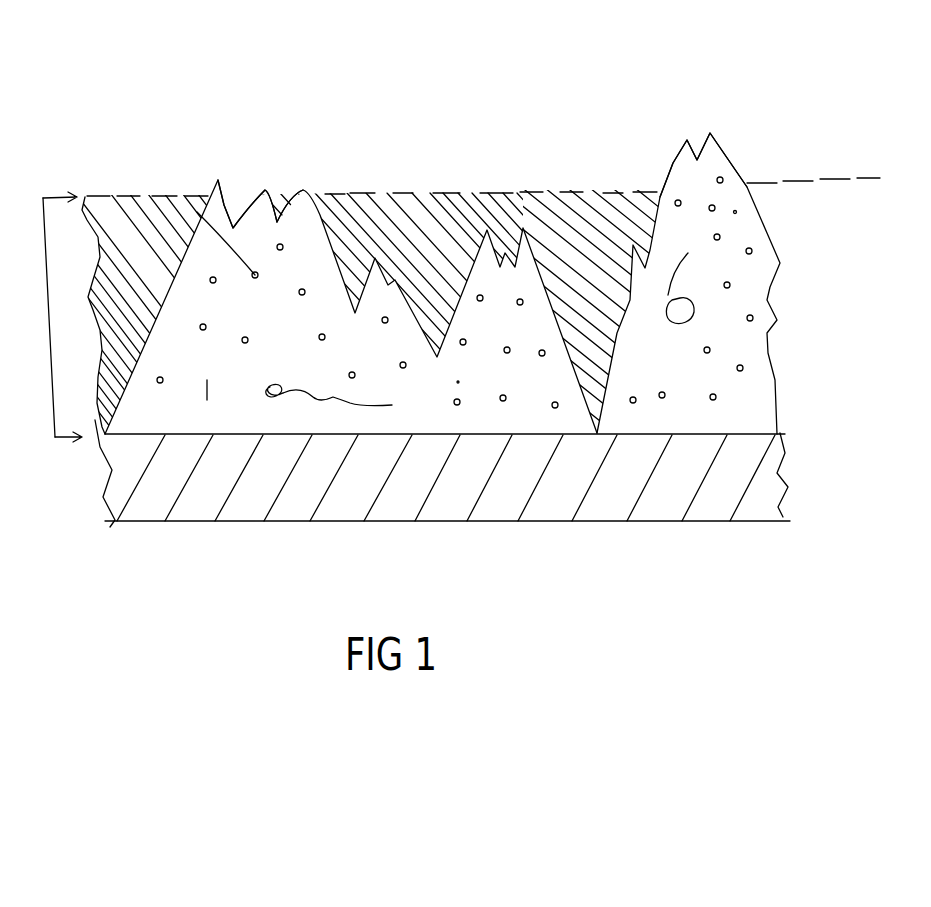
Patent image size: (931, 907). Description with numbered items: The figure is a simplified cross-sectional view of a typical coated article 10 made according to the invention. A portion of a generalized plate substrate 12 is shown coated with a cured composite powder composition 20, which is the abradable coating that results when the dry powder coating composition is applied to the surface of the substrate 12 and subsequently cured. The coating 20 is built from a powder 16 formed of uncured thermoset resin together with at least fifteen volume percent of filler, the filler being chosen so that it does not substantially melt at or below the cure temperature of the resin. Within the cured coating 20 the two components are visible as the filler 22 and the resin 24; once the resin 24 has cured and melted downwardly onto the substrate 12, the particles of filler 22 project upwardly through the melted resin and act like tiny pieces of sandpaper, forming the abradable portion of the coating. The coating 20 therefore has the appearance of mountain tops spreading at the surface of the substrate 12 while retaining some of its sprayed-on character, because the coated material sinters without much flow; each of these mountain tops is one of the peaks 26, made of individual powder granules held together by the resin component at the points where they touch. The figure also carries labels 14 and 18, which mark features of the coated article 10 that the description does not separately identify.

The coated article 10 is at (449, 399).
The plate substrate 12 is at (703, 498).
The coating layer 14 is at (475, 389).
The powder 16 is at (278, 393).
The second phase region 18 is at (692, 322).
The cured composite powder composition 20 is at (50, 317).
The filler 22 is at (205, 380).
The resin 24 is at (400, 215).
The peak 26 is at (285, 220).